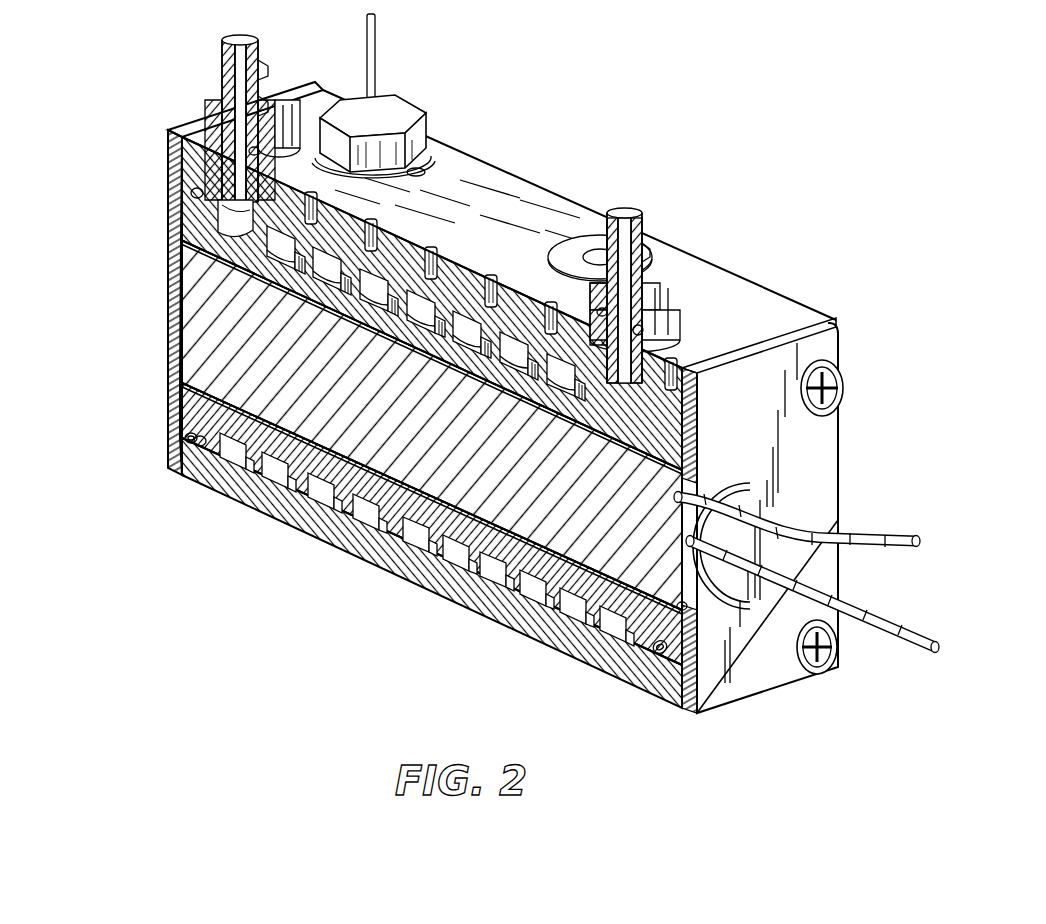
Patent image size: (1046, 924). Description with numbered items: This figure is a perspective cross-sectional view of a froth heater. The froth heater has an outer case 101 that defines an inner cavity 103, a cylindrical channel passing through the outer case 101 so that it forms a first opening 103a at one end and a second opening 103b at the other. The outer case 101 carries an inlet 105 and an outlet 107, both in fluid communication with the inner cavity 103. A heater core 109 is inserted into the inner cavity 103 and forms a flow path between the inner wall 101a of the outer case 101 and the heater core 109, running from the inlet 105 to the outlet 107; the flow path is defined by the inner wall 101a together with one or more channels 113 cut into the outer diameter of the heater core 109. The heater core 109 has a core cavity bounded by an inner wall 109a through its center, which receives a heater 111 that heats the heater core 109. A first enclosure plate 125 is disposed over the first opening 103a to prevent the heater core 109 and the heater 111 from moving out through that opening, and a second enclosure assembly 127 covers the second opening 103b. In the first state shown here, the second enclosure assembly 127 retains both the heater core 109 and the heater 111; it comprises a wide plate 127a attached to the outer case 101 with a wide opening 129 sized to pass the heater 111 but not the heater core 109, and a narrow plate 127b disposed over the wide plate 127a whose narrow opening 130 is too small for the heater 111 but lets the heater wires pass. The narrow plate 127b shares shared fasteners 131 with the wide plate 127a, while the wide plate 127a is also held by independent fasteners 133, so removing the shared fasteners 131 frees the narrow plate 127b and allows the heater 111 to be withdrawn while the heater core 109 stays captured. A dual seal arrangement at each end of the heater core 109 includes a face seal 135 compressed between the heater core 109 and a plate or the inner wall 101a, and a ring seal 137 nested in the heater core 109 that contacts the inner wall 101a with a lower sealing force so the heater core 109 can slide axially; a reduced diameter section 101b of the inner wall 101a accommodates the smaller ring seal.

The outer case 101 is at (287, 520).
The inner wall 101a is at (337, 506).
The reduced diameter section 101b is at (652, 383).
The inner cavity 103 is at (242, 464).
The first opening 103a is at (166, 346).
The second opening 103b is at (646, 660).
The inlet 105 is at (217, 128).
The outlet 107 is at (672, 325).
The heater core 109 is at (427, 564).
The inner wall of the heater core 109a is at (186, 436).
The heater 111 is at (511, 479).
The channels 113 is at (310, 245).
The first enclosure plate 125 is at (174, 200).
The second enclosure assembly 127 is at (815, 499).
The wide plate 127a is at (825, 568).
The narrow plate 127b is at (820, 443).
The wide opening 129 is at (735, 599).
The narrow opening 130 is at (740, 596).
The shared fasteners 131 is at (834, 322).
The independent fasteners 133 is at (840, 648).
The face seal 135 is at (684, 614).
The ring seal 137 is at (655, 653).